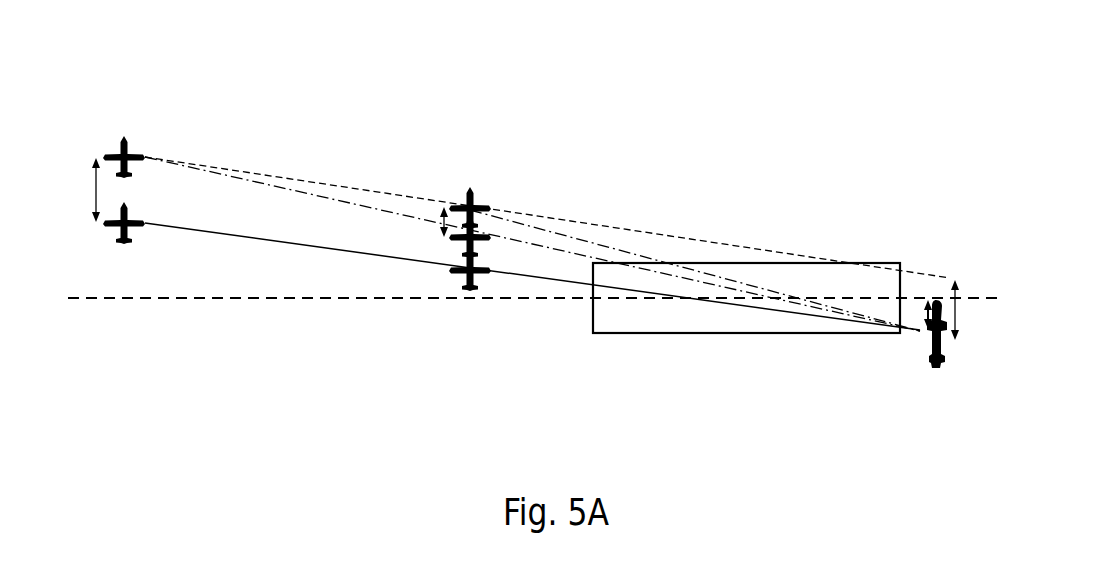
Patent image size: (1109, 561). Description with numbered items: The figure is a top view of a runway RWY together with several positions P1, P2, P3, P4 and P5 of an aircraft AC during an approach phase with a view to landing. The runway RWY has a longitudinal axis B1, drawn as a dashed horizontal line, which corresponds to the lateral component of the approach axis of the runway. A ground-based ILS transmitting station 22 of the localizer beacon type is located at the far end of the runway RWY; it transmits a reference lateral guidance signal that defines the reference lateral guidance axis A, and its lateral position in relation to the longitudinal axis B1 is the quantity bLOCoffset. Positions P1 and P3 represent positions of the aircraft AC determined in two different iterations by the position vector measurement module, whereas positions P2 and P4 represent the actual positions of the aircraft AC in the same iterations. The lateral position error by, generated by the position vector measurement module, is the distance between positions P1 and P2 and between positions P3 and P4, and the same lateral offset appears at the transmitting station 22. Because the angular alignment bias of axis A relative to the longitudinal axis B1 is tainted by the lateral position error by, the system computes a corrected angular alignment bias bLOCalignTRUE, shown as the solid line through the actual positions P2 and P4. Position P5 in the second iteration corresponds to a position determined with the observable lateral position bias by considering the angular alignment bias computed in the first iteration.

The first aircraft position P1 is at (127, 137).
The second aircraft position P2 is at (120, 257).
The third aircraft position P3 is at (466, 188).
The fourth aircraft position P4 is at (457, 292).
The fifth aircraft position P5 is at (483, 232).
The aircraft AC is at (362, 223).
The reference guidance axis A is at (250, 175).
The longitudinal axis of the runway B1 is at (313, 300).
The runway RWY is at (745, 334).
The ILS transmitting station 22 is at (935, 370).
The lateral position error by is at (529, 249).
The corrected angular alignment bias bLOCalignTRUE is at (290, 246).
The lateral position of the transmitting station bLOCoffset is at (940, 300).